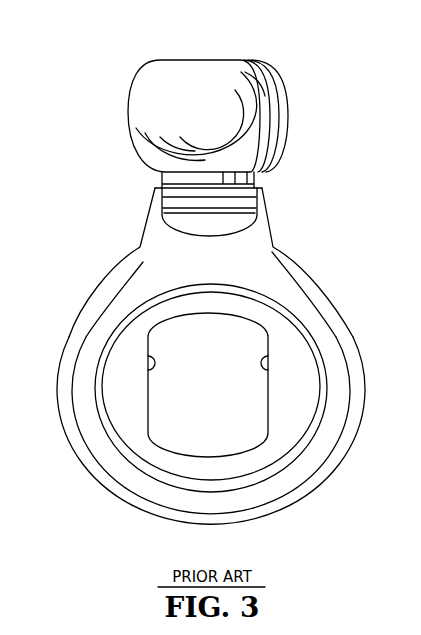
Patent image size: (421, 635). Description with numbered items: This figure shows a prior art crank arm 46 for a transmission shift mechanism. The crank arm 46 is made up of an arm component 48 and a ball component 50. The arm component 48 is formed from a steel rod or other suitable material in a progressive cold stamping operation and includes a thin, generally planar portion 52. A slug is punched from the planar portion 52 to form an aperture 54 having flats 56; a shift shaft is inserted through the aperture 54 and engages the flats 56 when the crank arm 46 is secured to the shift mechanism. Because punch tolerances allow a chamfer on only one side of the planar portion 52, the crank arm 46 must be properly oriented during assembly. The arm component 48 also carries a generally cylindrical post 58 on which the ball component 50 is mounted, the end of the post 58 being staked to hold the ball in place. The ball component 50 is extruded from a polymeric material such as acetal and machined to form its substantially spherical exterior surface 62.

The prior art crank arm 46 is at (103, 88).
The arm component 48 is at (155, 245).
The ball component 50 is at (280, 117).
The planar portion 52 is at (277, 432).
The aperture 54 is at (178, 427).
The flats 56 is at (150, 362).
The post 58 is at (254, 178).
The spherical exterior surface 62 is at (155, 83).